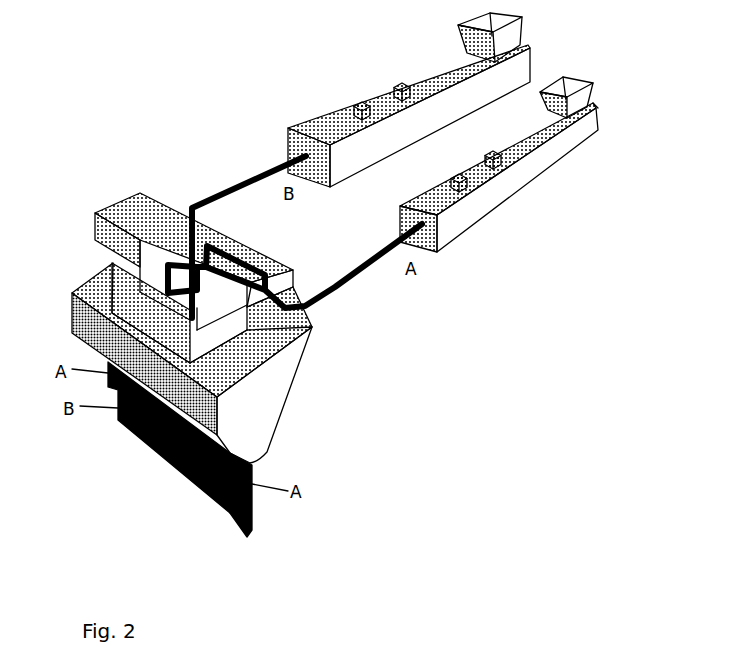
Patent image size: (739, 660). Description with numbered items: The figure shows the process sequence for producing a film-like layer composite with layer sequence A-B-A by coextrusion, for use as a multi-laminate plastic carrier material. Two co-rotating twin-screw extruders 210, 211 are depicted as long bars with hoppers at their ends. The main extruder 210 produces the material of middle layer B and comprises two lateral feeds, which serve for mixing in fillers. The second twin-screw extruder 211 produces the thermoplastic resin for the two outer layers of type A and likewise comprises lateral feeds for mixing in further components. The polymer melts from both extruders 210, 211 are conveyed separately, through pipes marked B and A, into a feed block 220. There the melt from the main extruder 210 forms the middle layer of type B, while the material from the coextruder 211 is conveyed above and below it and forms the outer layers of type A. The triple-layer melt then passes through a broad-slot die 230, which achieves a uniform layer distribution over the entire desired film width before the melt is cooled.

The main extruder 210 is at (398, 83).
The second twin-screw extruder 211 is at (533, 175).
The feed block 220 is at (112, 205).
The broad-slot die 230 is at (293, 380).